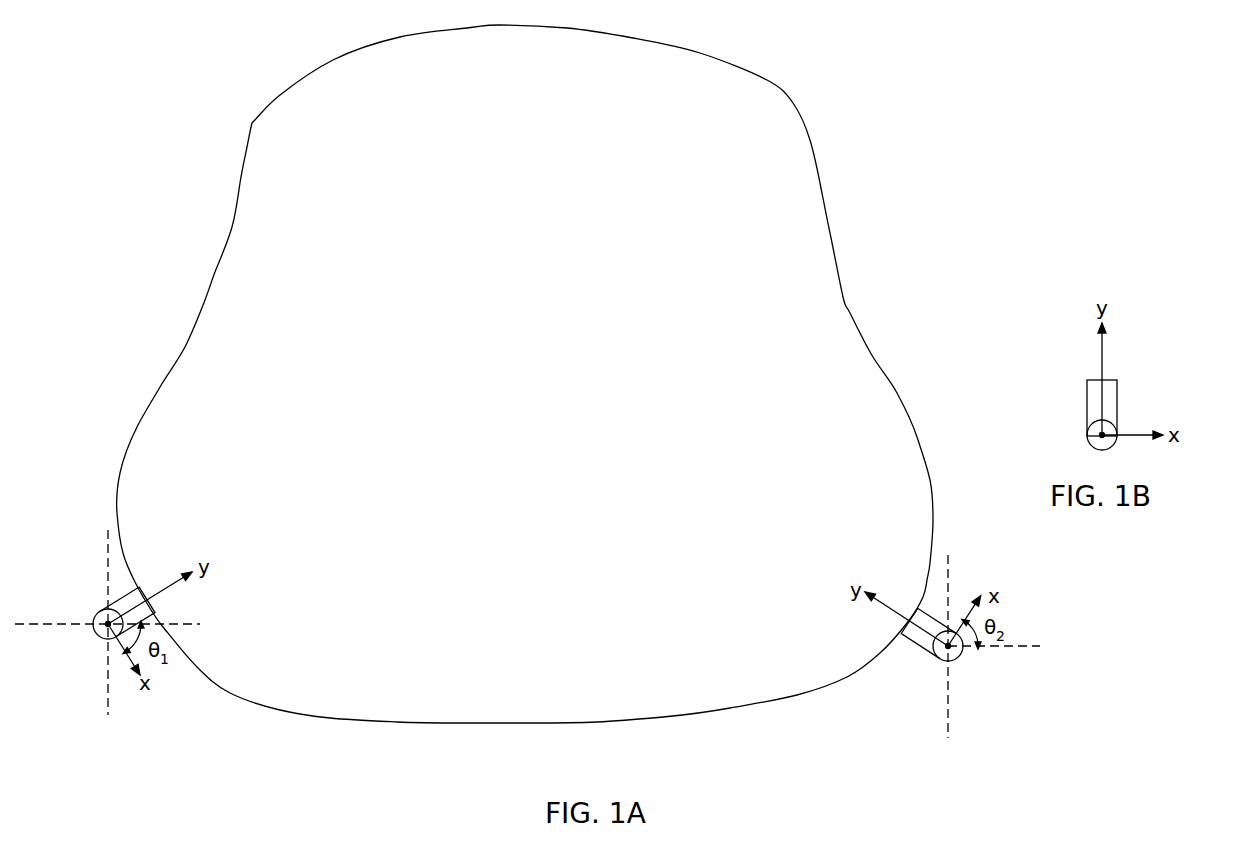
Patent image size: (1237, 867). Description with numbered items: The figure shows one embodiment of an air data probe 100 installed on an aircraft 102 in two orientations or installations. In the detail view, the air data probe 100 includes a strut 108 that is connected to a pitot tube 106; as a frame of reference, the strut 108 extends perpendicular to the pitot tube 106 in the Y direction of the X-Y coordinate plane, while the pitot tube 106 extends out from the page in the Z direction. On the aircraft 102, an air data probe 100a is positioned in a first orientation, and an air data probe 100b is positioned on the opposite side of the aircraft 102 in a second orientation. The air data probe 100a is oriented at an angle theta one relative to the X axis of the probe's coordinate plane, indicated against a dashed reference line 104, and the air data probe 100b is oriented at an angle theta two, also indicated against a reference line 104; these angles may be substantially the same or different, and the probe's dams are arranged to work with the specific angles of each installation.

In FIG. 1B, the air data probe 100 is at (1098, 414).
In FIG. 1A, the air data probe 100a is at (97, 611).
In FIG. 1A, the air data probe 100b is at (953, 660).
In FIG. 1A, the aircraft 102 is at (851, 313).
In FIG. 1A, the reference axis 104 is at (190, 622).
In FIG. 1B, the pitot tube 106 is at (1088, 442).
In FIG. 1A, the strut 108 is at (132, 584).
In FIG. 1B, the strut 108 is at (1118, 396).